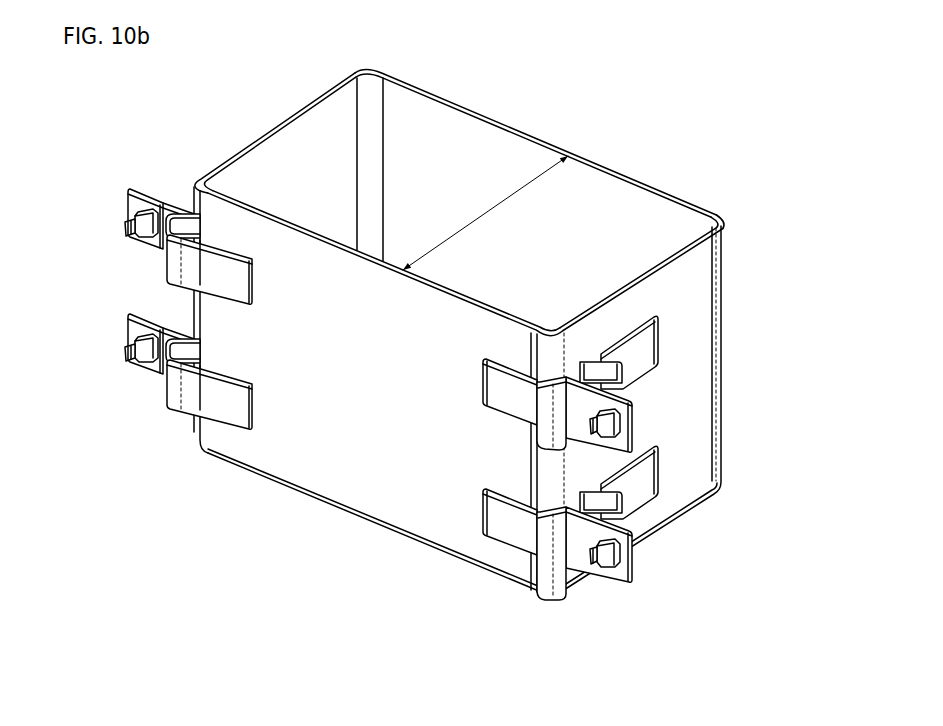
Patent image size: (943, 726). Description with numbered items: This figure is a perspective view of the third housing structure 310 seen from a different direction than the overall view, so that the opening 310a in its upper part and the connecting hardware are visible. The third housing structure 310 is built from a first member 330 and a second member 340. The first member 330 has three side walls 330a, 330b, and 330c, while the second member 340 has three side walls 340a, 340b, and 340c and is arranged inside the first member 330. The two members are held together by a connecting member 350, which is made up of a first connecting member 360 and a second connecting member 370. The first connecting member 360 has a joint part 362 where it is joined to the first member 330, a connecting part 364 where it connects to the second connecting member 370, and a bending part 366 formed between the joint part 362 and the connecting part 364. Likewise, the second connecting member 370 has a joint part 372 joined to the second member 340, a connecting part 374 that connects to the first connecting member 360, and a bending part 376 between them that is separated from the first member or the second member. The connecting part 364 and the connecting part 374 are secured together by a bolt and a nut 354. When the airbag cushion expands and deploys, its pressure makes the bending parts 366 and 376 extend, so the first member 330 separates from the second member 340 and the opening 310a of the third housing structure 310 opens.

The third housing structure 310 is at (485, 321).
The opening 310a is at (475, 216).
The first member 330 is at (498, 325).
The side wall 330a is at (695, 460).
The side wall 330b is at (500, 140).
The side wall 330c is at (322, 95).
The second member 340 is at (457, 335).
The side wall 340a is at (689, 242).
The side wall 340b is at (430, 527).
The side wall 340c is at (272, 148).
The connecting member 350 is at (457, 394).
The nut 354 is at (610, 412).
The first connecting member 360 is at (676, 353).
The joint part 362 is at (632, 348).
The connecting part 364 is at (638, 421).
The bending part 366 is at (667, 364).
The second connecting member 370 is at (495, 428).
The joint part 372 is at (497, 388).
The connecting part 374 is at (668, 491).
The bending part 376 is at (543, 416).